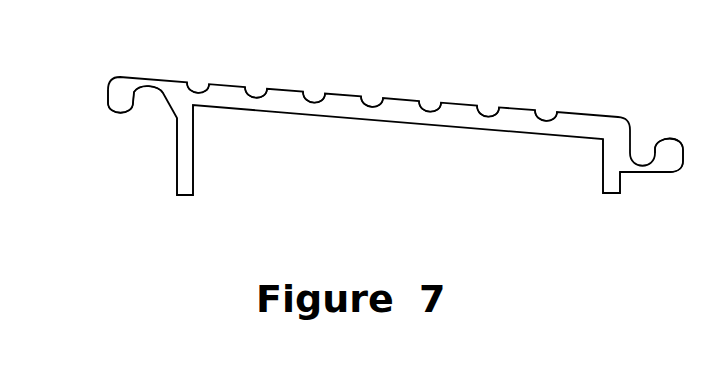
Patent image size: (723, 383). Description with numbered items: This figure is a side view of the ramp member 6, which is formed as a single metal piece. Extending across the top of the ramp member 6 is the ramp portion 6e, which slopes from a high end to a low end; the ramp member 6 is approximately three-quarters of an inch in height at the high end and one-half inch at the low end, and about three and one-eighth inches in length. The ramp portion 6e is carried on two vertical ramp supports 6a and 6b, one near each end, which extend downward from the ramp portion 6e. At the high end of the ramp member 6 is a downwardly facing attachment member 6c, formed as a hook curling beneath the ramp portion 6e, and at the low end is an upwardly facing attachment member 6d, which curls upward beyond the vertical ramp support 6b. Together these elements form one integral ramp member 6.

The ramp member 6 is at (538, 101).
The vertical ramp support 6a is at (177, 175).
The vertical ramp support 6b is at (620, 183).
The downwardly facing attachment member 6c is at (108, 89).
The upwardly facing attachment member 6d is at (667, 136).
The ramp portion 6e is at (343, 90).